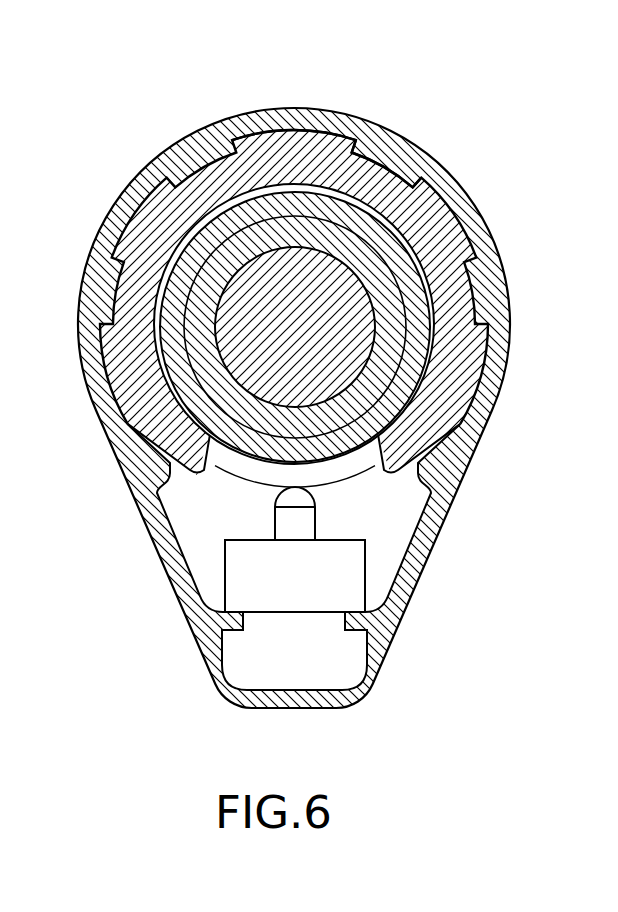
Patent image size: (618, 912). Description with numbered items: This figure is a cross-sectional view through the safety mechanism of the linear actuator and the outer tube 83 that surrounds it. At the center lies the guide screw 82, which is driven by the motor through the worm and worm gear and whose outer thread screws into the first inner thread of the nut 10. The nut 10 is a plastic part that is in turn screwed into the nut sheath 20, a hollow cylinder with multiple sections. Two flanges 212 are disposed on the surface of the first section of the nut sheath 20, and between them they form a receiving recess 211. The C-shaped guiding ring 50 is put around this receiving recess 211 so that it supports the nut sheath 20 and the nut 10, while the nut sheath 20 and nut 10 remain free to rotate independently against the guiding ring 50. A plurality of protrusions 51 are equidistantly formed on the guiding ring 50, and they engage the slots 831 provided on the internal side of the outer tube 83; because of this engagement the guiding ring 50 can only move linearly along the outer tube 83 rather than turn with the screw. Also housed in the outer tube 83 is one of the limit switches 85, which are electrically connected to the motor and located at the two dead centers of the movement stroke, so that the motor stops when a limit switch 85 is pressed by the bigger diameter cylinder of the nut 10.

The nut 10 is at (317, 270).
The nut sheath 20 is at (377, 273).
The receiving recess 211 is at (417, 301).
The flanges 212 is at (340, 472).
The guiding ring 50 is at (221, 187).
The protrusions 51 is at (297, 142).
The guide screw 82 is at (385, 166).
The outer tube 83 is at (460, 205).
The slots 831 is at (331, 132).
The limit switches 85 is at (333, 568).